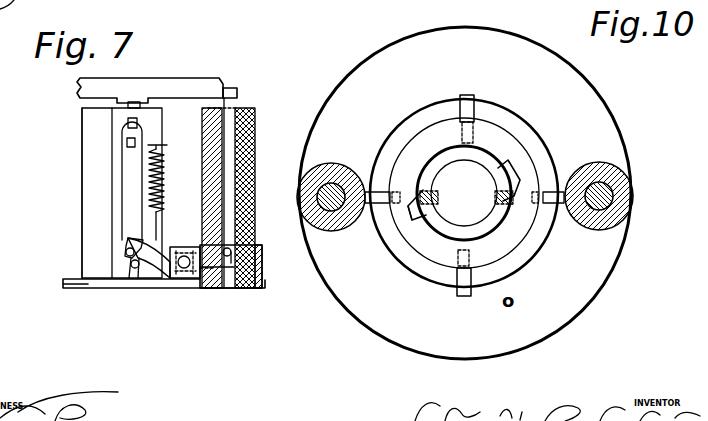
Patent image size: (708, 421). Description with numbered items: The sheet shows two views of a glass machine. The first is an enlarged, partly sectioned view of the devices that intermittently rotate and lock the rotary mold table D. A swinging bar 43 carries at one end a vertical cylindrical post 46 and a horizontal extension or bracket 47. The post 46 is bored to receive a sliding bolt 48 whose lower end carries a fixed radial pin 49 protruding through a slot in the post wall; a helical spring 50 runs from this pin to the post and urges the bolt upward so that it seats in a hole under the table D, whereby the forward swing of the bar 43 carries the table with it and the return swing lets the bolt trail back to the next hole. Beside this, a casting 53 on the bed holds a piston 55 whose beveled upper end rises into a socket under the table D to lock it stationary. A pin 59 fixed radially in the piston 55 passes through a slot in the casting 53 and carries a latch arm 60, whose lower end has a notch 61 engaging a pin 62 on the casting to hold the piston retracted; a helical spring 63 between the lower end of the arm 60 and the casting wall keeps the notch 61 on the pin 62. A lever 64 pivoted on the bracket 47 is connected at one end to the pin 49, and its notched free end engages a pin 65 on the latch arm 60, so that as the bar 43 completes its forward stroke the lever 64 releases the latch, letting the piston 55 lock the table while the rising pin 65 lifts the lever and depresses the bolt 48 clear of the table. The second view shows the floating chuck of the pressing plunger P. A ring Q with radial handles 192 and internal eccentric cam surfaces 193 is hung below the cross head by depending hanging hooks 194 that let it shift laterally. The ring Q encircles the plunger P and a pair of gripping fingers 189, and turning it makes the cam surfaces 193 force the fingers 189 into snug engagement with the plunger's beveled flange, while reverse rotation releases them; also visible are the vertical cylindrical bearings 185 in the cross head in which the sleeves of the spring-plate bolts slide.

In FIG. 7, the table D is at (199, 78).
In FIG. 7, the piston 55 is at (137, 100).
In FIG. 7, the sliding bolt 48 is at (234, 106).
In FIG. 7, the radial pin 49 is at (231, 270).
In FIG. 7, the vertical cylindrical post 46 is at (256, 176).
In FIG. 7, the helical spring 50 is at (257, 141).
In FIG. 7, the bar 43 is at (262, 270).
In FIG. 7, the latch arm 60 is at (125, 199).
In FIG. 7, the casting 53 is at (90, 229).
In FIG. 7, the pin 59 is at (122, 141).
In FIG. 7, the helical spring 63 is at (163, 178).
In FIG. 7, the lever 64 is at (160, 248).
In FIG. 7, the pin 65 is at (126, 252).
In FIG. 7, the notch 61 is at (128, 273).
In FIG. 7, the pin 62 is at (135, 270).
In FIG. 7, the horizontal extension or bracket 47 is at (192, 280).
In FIG. 10, the ring Q is at (464, 184).
In FIG. 10, the pressing plunger P is at (464, 193).
In FIG. 10, the gripping fingers 189 is at (424, 206).
In FIG. 10, the internal eccentric cam surfaces 193 is at (416, 212).
In FIG. 10, the radial handles 192 is at (474, 97).
In FIG. 10, the hanging hooks 194 is at (551, 187).
In FIG. 10, the vertical cylindrical bearings 185 is at (340, 231).